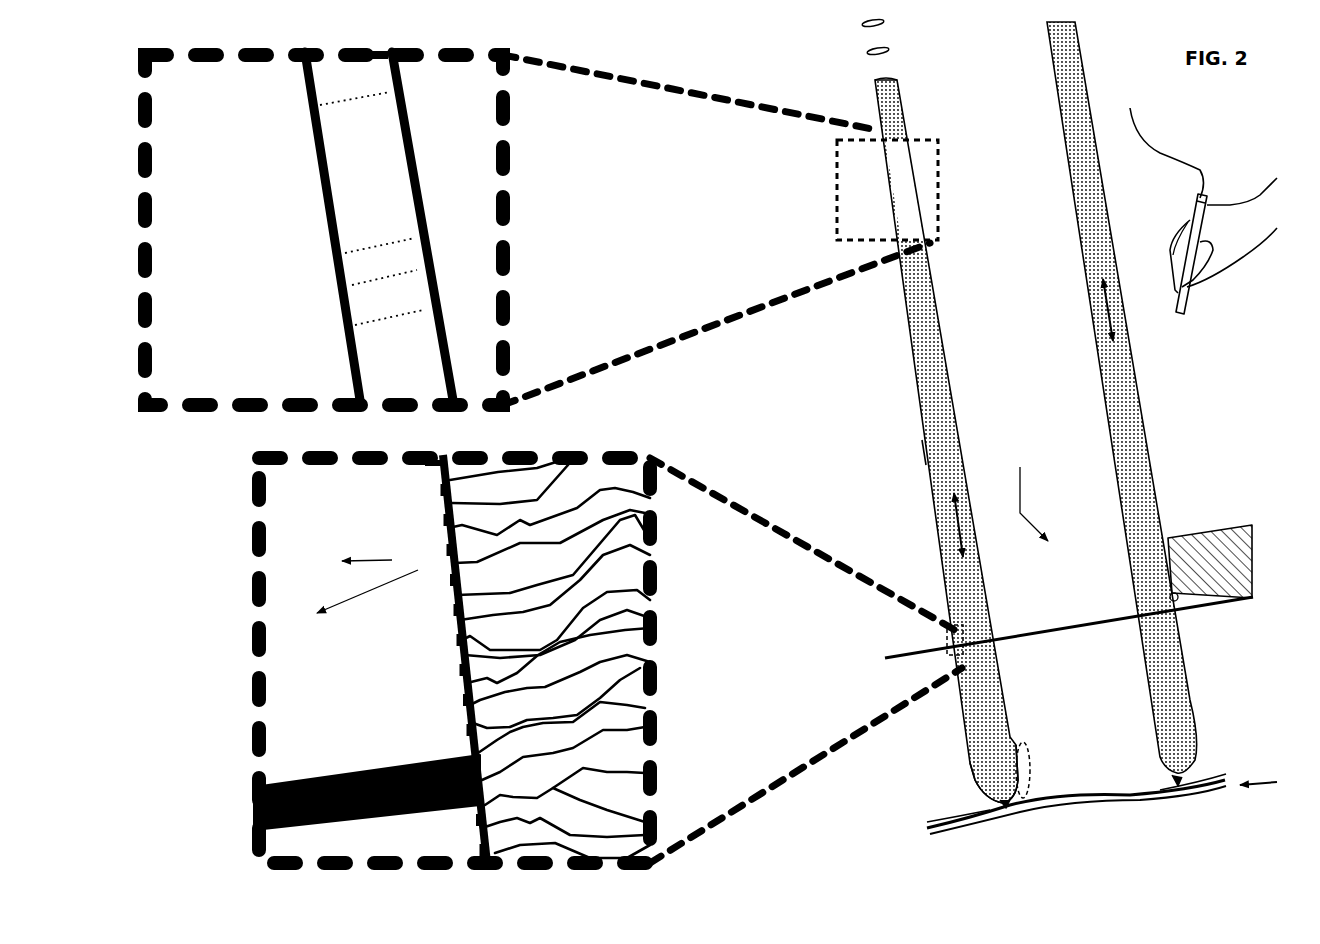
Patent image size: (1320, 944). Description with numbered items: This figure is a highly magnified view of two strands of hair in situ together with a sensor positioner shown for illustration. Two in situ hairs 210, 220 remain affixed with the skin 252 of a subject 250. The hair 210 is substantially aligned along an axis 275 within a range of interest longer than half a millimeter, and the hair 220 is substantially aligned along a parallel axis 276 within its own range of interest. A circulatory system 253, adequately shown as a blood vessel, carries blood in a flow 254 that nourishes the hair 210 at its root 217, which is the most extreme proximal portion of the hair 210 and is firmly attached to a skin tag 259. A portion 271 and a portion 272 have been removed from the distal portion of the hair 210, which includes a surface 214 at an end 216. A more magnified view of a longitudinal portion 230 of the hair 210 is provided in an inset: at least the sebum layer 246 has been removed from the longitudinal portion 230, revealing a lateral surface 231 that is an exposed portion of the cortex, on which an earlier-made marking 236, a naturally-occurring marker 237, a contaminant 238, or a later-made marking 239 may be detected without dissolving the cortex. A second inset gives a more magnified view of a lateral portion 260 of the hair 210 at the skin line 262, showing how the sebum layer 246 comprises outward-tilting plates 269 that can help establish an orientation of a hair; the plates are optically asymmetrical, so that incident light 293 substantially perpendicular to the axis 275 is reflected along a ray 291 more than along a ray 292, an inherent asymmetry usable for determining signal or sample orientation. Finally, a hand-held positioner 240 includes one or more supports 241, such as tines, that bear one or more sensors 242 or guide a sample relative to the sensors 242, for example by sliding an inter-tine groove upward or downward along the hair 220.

The hair 210 is at (942, 392).
The surface 214 is at (880, 78).
The end 216 is at (905, 80).
The root 217 is at (985, 763).
The hair 220 is at (1087, 208).
The longitudinal portion 230 is at (836, 192).
The lateral surface 231 is at (355, 167).
The earlier-made marking 236 is at (298, 113).
The naturally-occurring marker 237 is at (320, 258).
The contaminant 238 is at (322, 295).
The later-made marking 239 is at (335, 331).
The hand-held positioner 240 is at (1208, 197).
The support 241 is at (1246, 527).
The sensor 242 is at (1195, 610).
The sebum layer 246 is at (928, 453).
The subject 250 is at (1025, 492).
The skin 252 is at (1091, 676).
The circulatory system 253 is at (1083, 807).
The flow 254 is at (1261, 798).
The skin tag 259 is at (1027, 783).
The lateral portion 260 is at (945, 632).
The skin line 262 is at (242, 800).
The outward-tilting plates 269 is at (574, 692).
The portion 271 is at (860, 22).
The portion 272 is at (865, 50).
The axis 275 is at (953, 533).
The axis 276 is at (1100, 318).
The ray 291 is at (364, 605).
The ray 292 is at (390, 559).
The incident light 293 is at (436, 562).